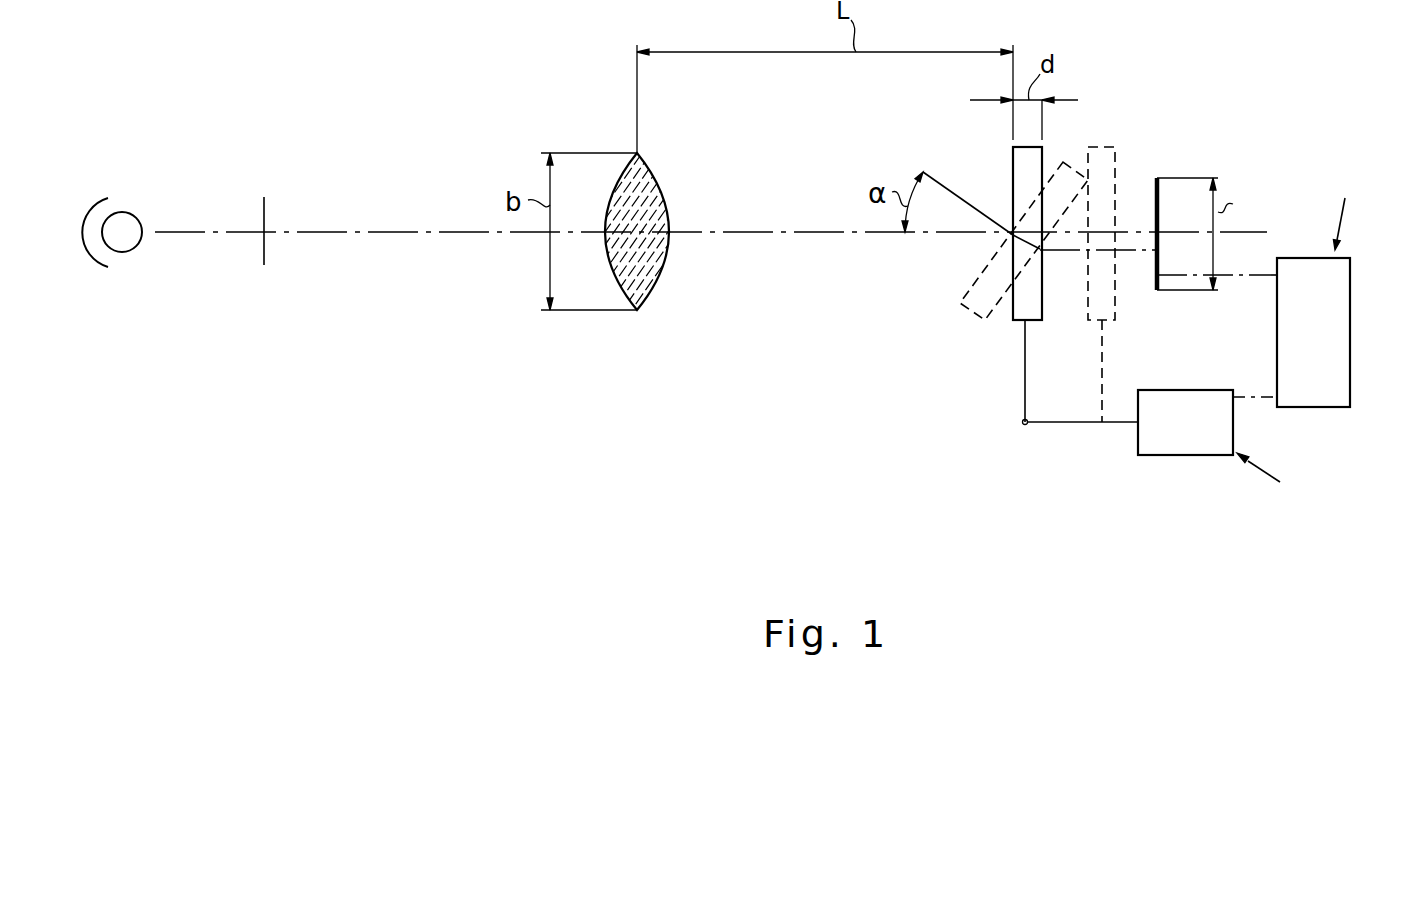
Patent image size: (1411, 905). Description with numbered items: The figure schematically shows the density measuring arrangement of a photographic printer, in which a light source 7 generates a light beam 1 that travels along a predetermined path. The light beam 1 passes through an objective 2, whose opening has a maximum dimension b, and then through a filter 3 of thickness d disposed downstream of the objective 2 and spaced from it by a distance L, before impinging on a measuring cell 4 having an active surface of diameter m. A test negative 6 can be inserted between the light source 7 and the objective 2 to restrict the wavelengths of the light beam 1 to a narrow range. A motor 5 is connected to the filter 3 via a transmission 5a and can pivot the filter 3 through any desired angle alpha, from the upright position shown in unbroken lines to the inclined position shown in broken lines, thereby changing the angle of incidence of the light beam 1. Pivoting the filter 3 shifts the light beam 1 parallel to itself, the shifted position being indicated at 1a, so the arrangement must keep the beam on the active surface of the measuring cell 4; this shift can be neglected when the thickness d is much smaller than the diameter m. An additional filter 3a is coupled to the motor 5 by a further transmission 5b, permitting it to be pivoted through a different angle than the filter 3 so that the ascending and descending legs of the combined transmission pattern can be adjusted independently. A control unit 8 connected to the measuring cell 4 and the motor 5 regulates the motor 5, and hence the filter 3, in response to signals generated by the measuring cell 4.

The light beam 1 is at (178, 232).
The shifted position of the light beam 1a is at (1068, 254).
The objective 2 is at (655, 168).
The filter 3 is at (1005, 321).
The additional filter 3a is at (1113, 314).
The measuring cell 4 is at (1155, 192).
The motor 5 is at (1193, 456).
The transmission 5a is at (1028, 355).
The transmission 5b is at (1105, 358).
The test negative 6 is at (266, 234).
The light source 7 is at (90, 188).
The control unit 8 is at (1340, 390).